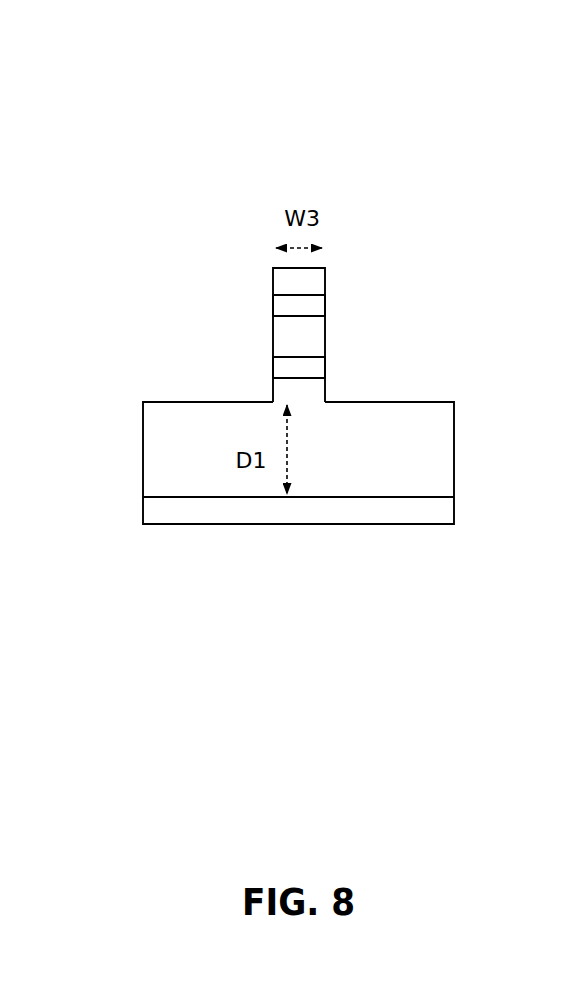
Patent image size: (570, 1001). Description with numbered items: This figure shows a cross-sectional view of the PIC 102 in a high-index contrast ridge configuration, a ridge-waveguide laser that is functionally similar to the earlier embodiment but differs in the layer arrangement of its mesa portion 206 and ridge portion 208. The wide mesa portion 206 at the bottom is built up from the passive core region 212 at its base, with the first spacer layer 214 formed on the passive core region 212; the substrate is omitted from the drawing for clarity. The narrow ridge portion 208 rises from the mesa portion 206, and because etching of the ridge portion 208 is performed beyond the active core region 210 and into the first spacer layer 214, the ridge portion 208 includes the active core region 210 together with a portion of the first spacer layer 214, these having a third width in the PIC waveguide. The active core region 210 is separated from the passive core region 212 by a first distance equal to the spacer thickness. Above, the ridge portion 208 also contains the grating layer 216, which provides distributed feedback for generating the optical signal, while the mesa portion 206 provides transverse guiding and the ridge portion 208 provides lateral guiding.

The photonic integrated circuit 102 is at (72, 99).
The mesa portion 206 is at (194, 400).
The ridge portion 208 is at (270, 280).
The active core region 210 is at (298, 375).
The passive core region 212 is at (233, 513).
The first spacer layer 214 is at (370, 455).
The grating layer 216 is at (298, 310).